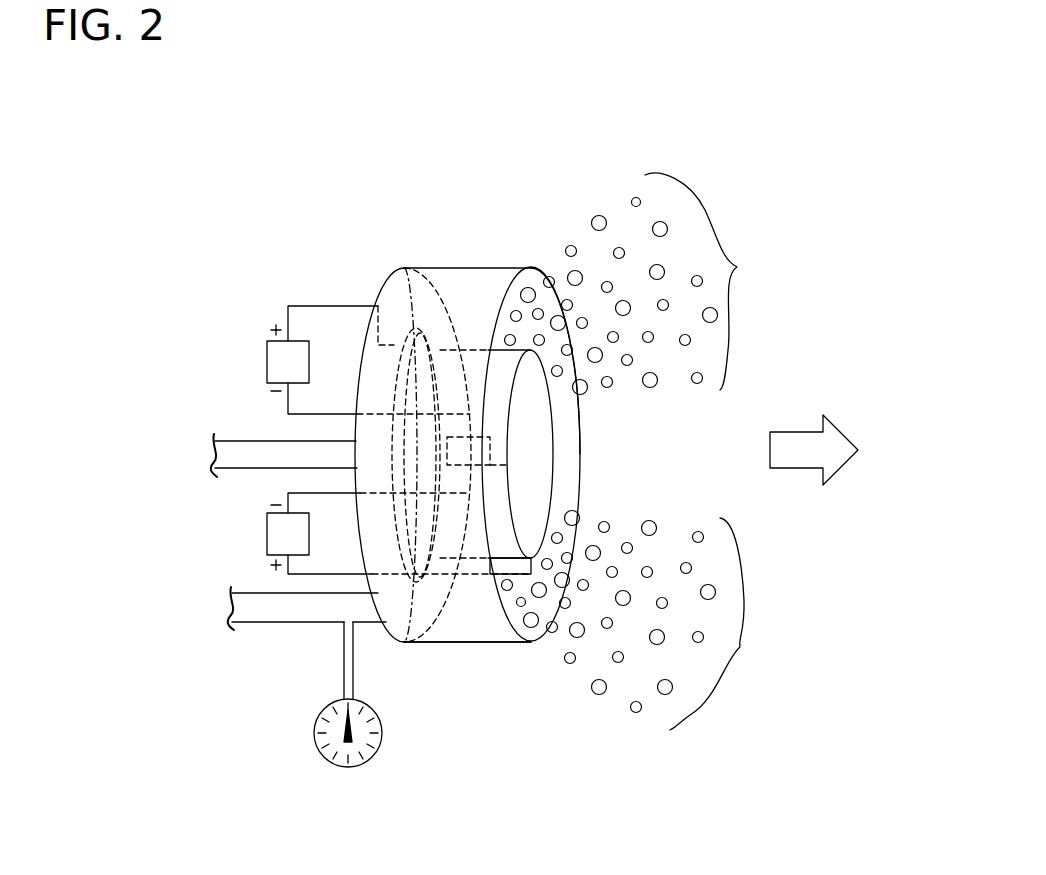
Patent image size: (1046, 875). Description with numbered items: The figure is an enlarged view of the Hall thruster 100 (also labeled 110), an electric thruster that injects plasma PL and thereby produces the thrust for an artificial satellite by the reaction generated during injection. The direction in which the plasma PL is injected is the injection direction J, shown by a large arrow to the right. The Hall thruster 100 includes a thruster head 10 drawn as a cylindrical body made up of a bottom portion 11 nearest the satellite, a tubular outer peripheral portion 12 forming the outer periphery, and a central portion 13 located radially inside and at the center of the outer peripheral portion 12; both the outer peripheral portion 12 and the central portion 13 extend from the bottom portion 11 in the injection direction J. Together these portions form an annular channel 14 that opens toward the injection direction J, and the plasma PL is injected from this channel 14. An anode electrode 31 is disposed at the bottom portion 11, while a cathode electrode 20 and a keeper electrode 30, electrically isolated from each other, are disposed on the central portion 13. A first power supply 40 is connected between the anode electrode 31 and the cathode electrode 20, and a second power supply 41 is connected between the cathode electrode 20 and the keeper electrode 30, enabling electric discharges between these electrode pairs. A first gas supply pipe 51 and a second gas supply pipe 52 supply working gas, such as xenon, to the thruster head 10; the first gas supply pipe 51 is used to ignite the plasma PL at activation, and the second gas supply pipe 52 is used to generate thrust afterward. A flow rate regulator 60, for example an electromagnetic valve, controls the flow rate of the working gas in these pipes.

The Hall thruster 100 is at (252, 181).
The plasma generating unit 110 is at (258, 186).
The thruster head 10 is at (475, 283).
The bottom portion 11 is at (387, 295).
The outer peripheral portion 12 is at (472, 620).
The central portion 13 is at (510, 545).
The channel 14 is at (532, 278).
The cathode electrode 20 is at (519, 452).
The keeper electrode 30 is at (545, 480).
The anode electrode 31 is at (398, 266).
The first power supply 40 is at (267, 359).
The second power supply 41 is at (267, 532).
The first gas supply pipe 51 is at (268, 452).
The second gas supply pipe 52 is at (290, 608).
The flow rate regulator 60 is at (383, 733).
The plasma PL is at (645, 451).
The injection direction J is at (828, 450).